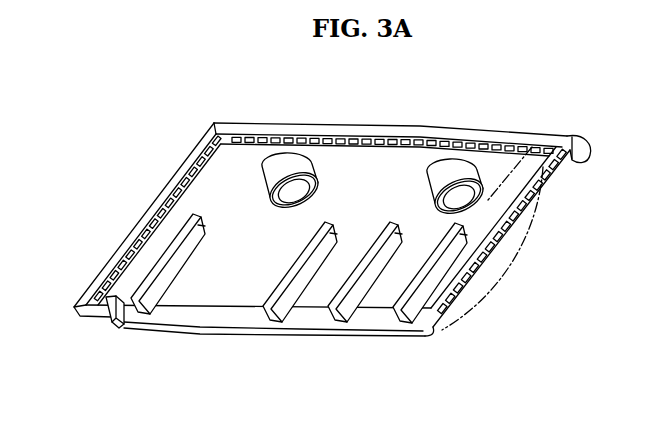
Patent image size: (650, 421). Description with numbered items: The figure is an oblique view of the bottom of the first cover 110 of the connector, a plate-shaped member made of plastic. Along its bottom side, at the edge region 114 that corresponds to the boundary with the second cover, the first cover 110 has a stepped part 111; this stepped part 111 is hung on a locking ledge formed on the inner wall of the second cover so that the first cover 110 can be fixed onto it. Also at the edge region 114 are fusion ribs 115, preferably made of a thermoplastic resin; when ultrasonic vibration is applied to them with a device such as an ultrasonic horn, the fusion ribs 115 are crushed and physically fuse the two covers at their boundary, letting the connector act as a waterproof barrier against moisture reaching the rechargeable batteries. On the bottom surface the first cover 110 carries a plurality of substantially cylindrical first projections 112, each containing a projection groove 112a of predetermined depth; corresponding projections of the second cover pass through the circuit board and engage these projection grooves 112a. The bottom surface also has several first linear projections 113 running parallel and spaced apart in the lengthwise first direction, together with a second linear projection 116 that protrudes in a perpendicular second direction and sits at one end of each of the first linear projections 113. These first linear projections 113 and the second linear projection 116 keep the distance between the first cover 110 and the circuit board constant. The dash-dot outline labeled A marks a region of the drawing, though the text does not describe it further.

The first cover 110 is at (357, 222).
The stepped part 111 is at (518, 175).
The first projections 112 is at (478, 197).
The projection grooves 112a is at (461, 196).
The first linear projections 113 is at (457, 277).
The edge region 114 is at (587, 163).
The fusion ribs 115 is at (543, 141).
The second linear projection 116 is at (378, 320).
The region A is at (505, 290).